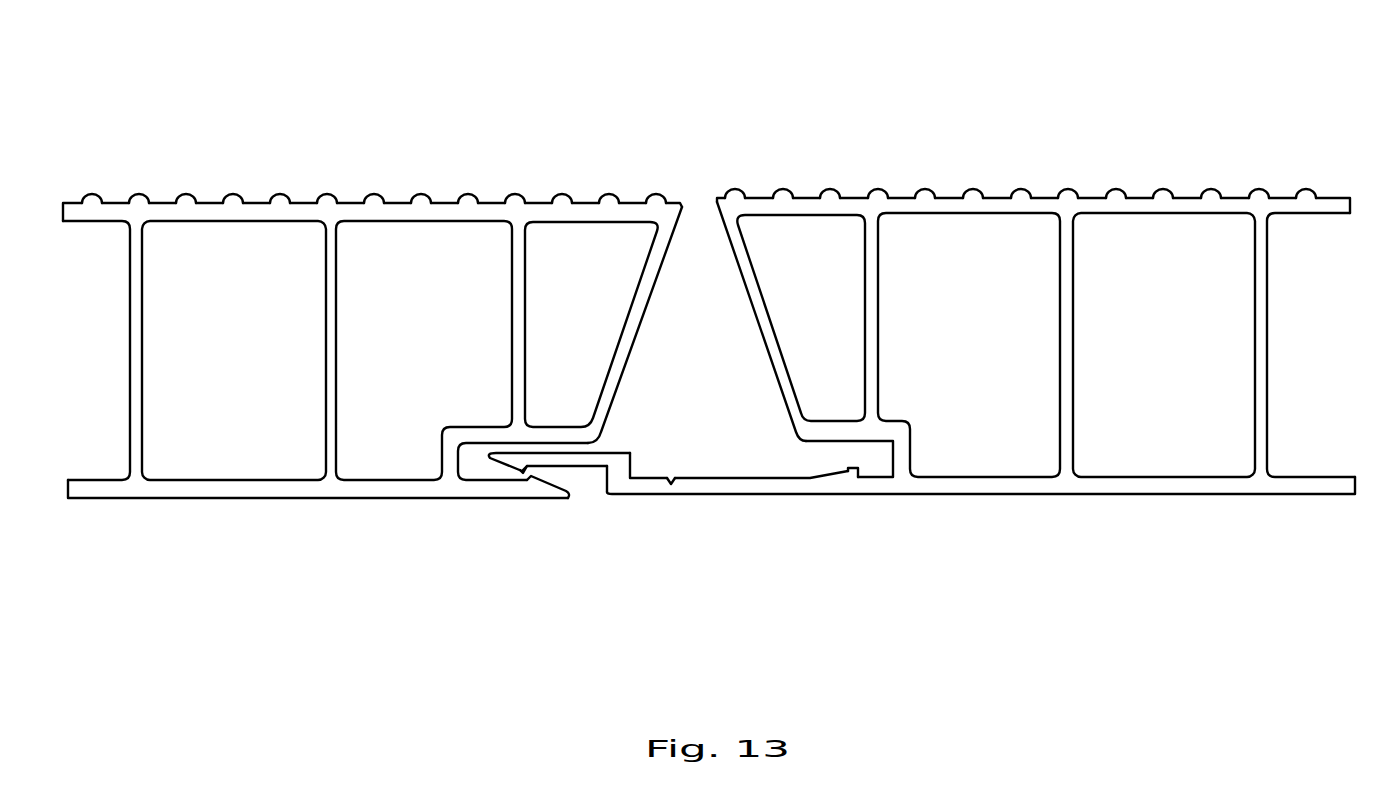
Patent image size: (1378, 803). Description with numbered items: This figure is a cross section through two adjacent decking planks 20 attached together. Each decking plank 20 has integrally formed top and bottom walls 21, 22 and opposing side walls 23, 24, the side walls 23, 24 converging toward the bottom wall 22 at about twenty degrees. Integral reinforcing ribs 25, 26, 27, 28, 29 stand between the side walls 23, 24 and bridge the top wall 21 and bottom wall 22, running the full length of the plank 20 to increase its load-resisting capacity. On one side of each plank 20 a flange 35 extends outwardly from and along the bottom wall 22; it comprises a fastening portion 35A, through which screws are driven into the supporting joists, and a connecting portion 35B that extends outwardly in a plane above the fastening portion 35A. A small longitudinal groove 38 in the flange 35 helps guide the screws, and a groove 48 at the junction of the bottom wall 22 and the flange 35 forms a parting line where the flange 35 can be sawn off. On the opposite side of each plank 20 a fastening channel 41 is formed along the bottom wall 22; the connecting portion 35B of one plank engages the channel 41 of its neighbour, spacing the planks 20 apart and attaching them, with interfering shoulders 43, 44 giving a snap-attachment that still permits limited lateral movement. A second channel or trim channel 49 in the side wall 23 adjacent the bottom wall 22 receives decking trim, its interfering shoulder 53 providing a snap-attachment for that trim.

The decking plank 20 is at (371, 148).
The top wall 21 is at (267, 221).
The bottom wall 22 is at (200, 490).
The side wall 23 is at (750, 290).
The side wall 24 is at (652, 299).
The reinforcing rib 25 is at (873, 258).
The reinforcing rib 26 is at (1063, 257).
The reinforcing rib 27 is at (128, 386).
The reinforcing rib 28 is at (325, 386).
The reinforcing rib 29 is at (519, 286).
The flange 35 is at (636, 443).
The fastening portion 35A is at (643, 482).
The connecting portion 35B is at (586, 462).
The groove 38 is at (670, 482).
The fastening channel 41 is at (460, 460).
The interfering shoulder 43 is at (513, 470).
The interfering shoulder 44 is at (528, 477).
The groove 48 is at (810, 480).
The trim channel 49 is at (893, 458).
The interfering shoulder 53 is at (856, 472).